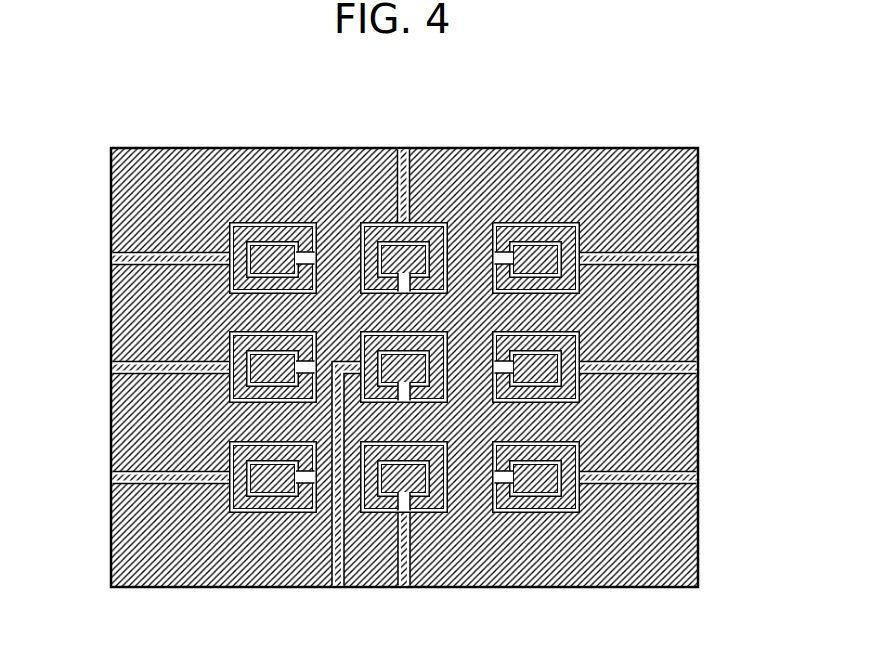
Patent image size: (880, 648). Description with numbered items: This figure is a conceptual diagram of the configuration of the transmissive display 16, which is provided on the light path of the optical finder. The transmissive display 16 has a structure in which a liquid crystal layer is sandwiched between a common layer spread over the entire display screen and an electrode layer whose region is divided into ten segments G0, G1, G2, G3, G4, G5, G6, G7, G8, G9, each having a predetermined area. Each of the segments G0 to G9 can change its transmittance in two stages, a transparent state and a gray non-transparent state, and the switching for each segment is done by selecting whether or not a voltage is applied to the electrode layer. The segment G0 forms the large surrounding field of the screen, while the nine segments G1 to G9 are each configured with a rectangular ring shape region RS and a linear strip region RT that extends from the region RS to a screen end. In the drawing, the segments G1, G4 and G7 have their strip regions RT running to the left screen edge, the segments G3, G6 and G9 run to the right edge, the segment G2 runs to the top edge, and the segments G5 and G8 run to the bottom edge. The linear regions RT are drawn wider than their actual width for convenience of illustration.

The transmissive display 16 is at (753, 52).
The segment G0 is at (685, 187).
The segment G1 is at (111, 260).
The segment G2 is at (403, 147).
The segment G3 is at (698, 258).
The segment G4 is at (111, 370).
The segment G5 is at (337, 588).
The segment G6 is at (698, 370).
The segment G7 is at (111, 478).
The segment G8 is at (401, 588).
The segment G9 is at (698, 480).
The rectangular ring shape region RS is at (274, 218).
The linear region RT is at (167, 243).